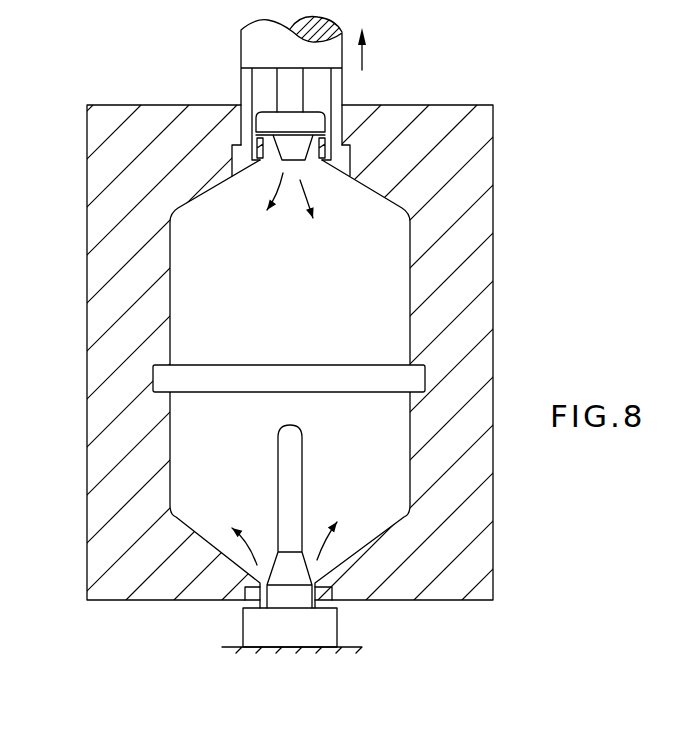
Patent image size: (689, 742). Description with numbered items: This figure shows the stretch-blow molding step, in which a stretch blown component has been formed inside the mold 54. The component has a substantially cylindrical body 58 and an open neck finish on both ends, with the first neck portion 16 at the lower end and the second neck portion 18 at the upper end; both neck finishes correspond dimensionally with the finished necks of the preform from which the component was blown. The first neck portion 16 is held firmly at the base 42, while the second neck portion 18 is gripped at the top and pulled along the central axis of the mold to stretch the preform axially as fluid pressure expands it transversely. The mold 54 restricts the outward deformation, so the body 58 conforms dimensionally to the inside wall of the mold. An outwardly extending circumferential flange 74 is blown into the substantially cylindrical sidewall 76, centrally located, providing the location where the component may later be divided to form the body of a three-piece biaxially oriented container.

The first neck portion 16 is at (320, 595).
The second neck portion 18 is at (325, 143).
The base 42 is at (245, 627).
The mold 54 is at (87, 533).
The body 58 is at (410, 275).
The circumferential flange 74 is at (153, 373).
The cylindrical sidewall 76 is at (170, 473).